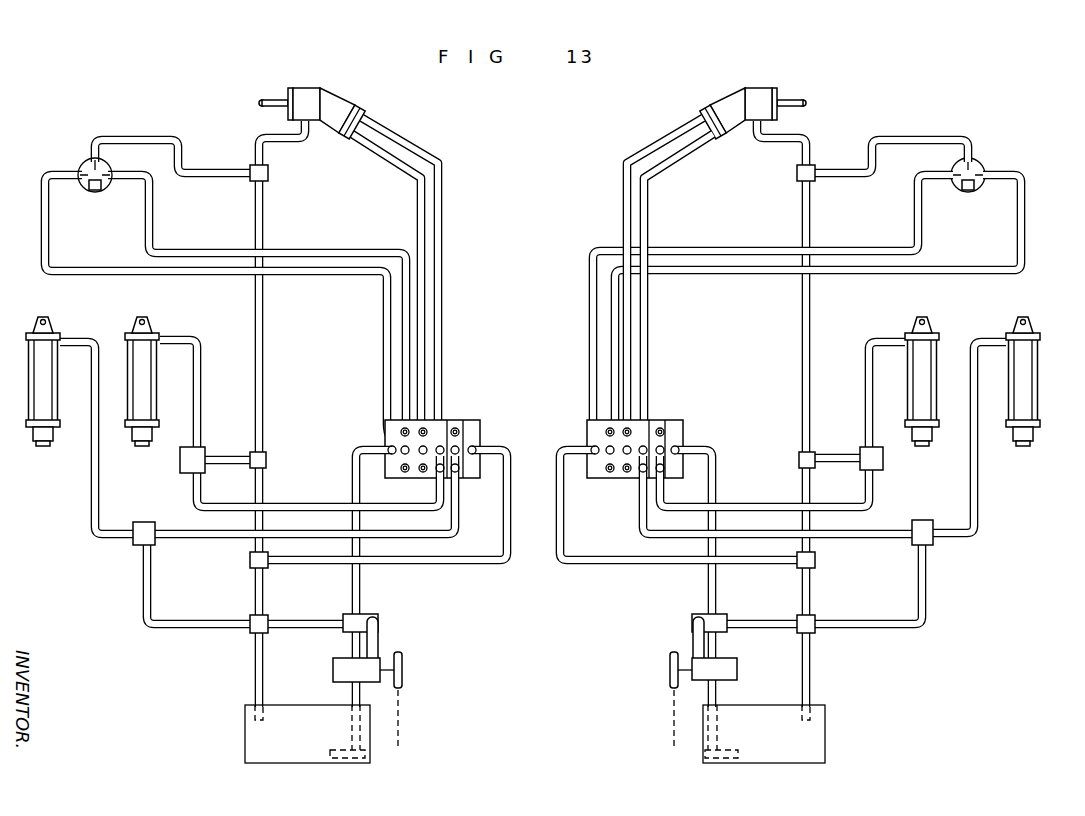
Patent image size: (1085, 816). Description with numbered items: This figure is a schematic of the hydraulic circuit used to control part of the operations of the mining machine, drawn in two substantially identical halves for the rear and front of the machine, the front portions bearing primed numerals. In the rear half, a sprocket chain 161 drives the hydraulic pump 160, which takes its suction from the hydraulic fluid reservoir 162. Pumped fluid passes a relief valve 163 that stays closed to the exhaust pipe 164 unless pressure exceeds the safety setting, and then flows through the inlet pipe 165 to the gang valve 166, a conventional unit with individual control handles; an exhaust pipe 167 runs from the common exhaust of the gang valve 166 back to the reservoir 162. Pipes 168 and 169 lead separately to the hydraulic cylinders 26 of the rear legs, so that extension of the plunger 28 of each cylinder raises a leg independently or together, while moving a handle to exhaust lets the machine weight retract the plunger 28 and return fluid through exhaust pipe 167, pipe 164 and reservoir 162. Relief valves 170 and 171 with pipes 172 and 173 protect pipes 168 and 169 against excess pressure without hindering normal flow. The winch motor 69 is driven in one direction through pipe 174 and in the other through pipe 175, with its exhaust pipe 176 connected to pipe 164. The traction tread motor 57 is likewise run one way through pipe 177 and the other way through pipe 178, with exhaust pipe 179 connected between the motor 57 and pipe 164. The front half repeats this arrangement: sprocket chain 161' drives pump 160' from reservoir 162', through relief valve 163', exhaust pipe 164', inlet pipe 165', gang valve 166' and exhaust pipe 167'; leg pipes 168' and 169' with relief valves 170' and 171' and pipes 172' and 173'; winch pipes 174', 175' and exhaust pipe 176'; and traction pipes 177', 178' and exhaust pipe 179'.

The hydraulic cylinder 26 is at (130, 360).
The plunger 28 is at (45, 441).
The combined hydraulic motor and gear reducer 57 is at (303, 98).
The winch motor 69 is at (84, 165).
The hydraulic pump 160 is at (335, 655).
The sprocket chain 161 is at (412, 700).
The hydraulic fluid reservoir 162 is at (307, 734).
The relief valve 163 is at (339, 613).
The exhaust pipe 164 is at (282, 667).
The inlet pipe 165 is at (387, 578).
The gang valve 166 is at (426, 460).
The exhaust pipe 167 is at (387, 518).
The pipe 168 is at (305, 508).
The pipe 169 is at (300, 423).
The relief valve 170 is at (153, 520).
The relief valve 171 is at (211, 447).
The pipe 172 is at (198, 584).
The pipe 173 is at (227, 477).
The pipe 174 is at (222, 311).
The pipe 175 is at (257, 303).
The exhaust pipe 176 is at (173, 139).
The pipe 177 is at (379, 292).
The pipe 178 is at (400, 271).
The exhaust pipe 179 is at (291, 150).
The hydraulic pump 160' is at (733, 654).
The sprocket chain 161' is at (661, 700).
The hydraulic fluid reservoir 162' is at (764, 734).
The relief valve 163' is at (733, 613).
The exhaust pipe 164' is at (779, 667).
The inlet pipe 165' is at (680, 578).
The gang valve 166' is at (625, 460).
The exhaust pipe 167' is at (678, 518).
The pipe 168' is at (764, 481).
The pipe 169' is at (777, 508).
The relief valve 170' is at (854, 470).
The relief valve 171' is at (935, 518).
The pipe 172' is at (839, 439).
The pipe 173' is at (868, 584).
The pipe 174' is at (773, 311).
The pipe 175' is at (818, 303).
The exhaust pipe 176' is at (890, 136).
The pipe 177' is at (659, 273).
The pipe 178' is at (684, 292).
The exhaust pipe 179' is at (769, 150).